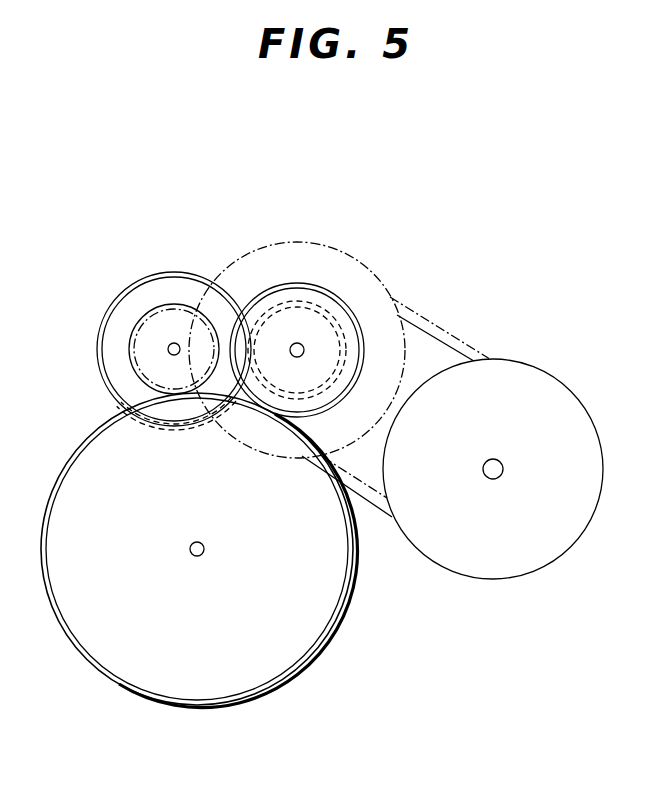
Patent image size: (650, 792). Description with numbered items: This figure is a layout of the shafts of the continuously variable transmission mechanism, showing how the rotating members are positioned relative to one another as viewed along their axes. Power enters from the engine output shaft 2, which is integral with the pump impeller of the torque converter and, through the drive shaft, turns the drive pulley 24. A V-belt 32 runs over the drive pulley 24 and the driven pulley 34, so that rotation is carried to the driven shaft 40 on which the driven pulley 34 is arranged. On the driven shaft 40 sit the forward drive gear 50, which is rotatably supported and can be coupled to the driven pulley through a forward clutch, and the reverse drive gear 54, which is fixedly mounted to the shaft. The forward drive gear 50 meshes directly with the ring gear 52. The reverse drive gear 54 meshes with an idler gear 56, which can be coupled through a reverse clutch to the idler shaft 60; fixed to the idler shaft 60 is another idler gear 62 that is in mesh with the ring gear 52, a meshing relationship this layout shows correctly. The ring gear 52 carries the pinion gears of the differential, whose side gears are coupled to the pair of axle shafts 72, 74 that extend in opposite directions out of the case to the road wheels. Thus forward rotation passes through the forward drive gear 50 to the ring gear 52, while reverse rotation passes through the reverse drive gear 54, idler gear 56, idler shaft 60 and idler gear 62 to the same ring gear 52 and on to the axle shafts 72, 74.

The engine output shaft 2 is at (503, 468).
The drive pulley 24 is at (555, 377).
The V-belt 32 is at (455, 336).
The driven pulley 34 is at (383, 283).
The driven shaft 40 is at (298, 343).
The forward drive gear 50 is at (278, 282).
The ring gear 52 is at (338, 615).
The reverse drive gear 54 is at (313, 300).
The idler gear 56 is at (168, 271).
The idler shaft 60 is at (168, 352).
The idler gear 62 is at (138, 322).
The axle shaft 72 is at (243, 574).
The axle shaft 74 is at (203, 555).